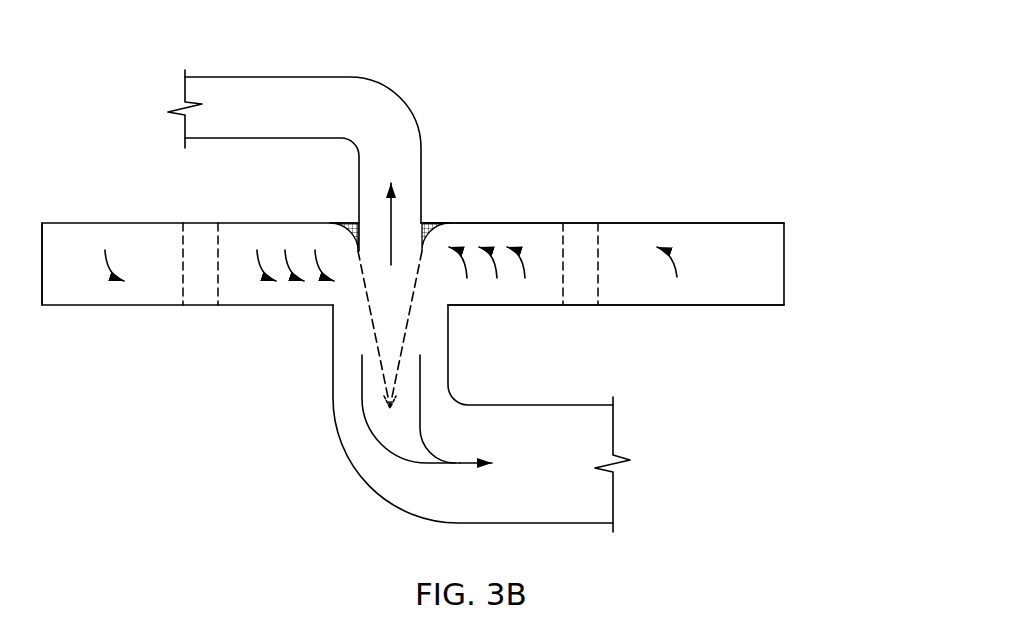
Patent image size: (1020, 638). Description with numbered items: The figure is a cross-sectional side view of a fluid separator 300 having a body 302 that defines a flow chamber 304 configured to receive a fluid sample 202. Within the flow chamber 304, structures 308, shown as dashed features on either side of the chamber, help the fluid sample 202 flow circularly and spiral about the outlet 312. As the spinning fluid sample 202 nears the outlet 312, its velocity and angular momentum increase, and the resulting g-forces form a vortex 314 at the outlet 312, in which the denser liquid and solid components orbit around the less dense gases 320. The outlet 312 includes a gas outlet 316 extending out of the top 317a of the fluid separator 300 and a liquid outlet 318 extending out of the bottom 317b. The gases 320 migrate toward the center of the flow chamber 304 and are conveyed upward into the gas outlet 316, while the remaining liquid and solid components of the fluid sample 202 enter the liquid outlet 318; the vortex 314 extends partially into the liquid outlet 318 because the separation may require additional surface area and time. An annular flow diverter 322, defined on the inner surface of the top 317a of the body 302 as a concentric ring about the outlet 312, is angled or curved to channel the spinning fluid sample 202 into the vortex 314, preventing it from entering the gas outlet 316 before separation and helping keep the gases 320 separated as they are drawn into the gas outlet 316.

The fluid separator 300 is at (575, 103).
The body 302 is at (784, 250).
The flow chamber 304 is at (68, 235).
The structures 308 is at (218, 292).
The outlet 312 is at (435, 206).
The vortex 314 is at (372, 304).
The gas outlet 316 is at (303, 77).
The top 317a is at (702, 223).
The bottom 317b is at (632, 305).
The liquid outlet 318 is at (513, 405).
The gases 320 is at (392, 192).
The annular flow diverter 322 is at (352, 222).
The fluid sample 202 is at (110, 272).